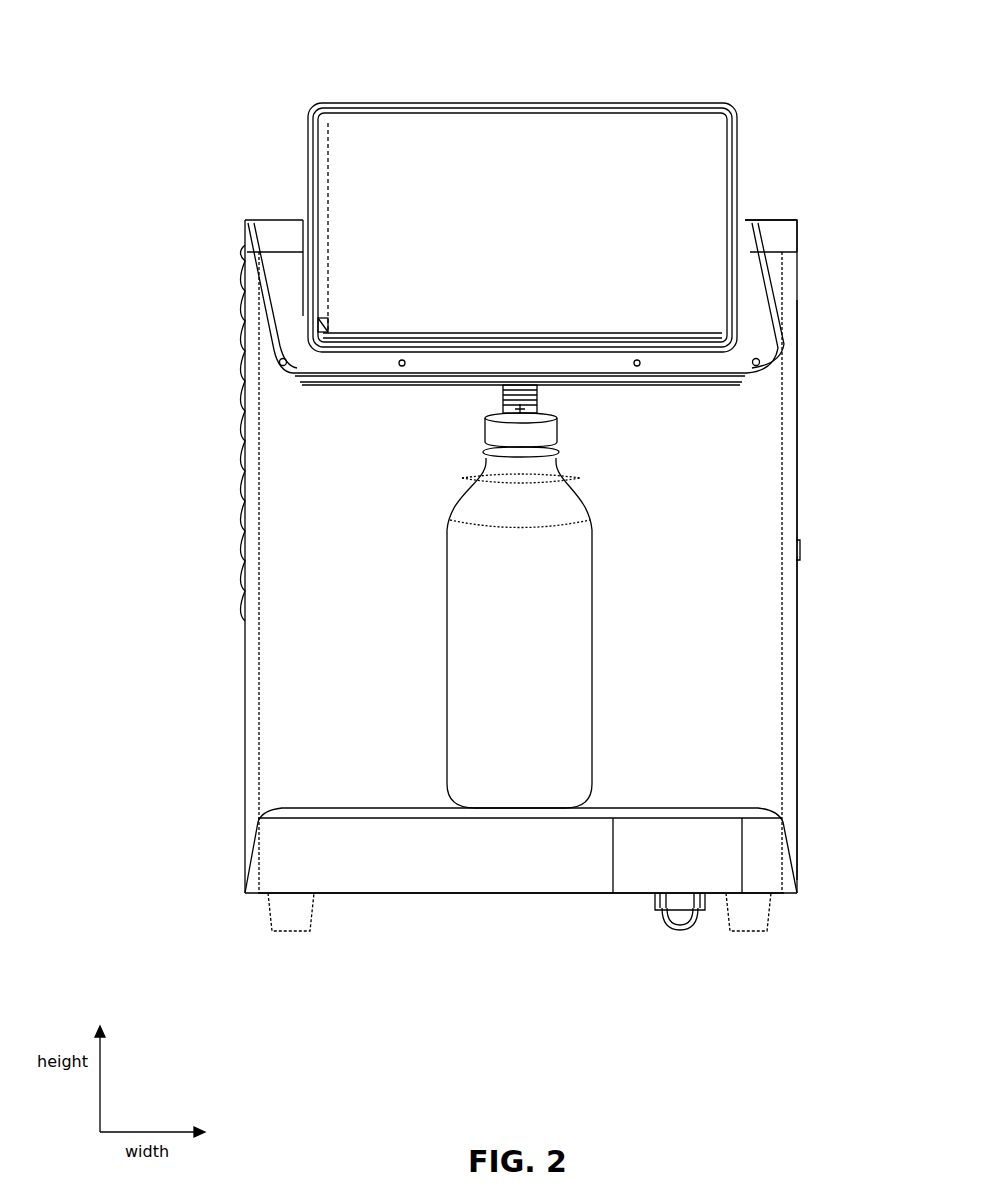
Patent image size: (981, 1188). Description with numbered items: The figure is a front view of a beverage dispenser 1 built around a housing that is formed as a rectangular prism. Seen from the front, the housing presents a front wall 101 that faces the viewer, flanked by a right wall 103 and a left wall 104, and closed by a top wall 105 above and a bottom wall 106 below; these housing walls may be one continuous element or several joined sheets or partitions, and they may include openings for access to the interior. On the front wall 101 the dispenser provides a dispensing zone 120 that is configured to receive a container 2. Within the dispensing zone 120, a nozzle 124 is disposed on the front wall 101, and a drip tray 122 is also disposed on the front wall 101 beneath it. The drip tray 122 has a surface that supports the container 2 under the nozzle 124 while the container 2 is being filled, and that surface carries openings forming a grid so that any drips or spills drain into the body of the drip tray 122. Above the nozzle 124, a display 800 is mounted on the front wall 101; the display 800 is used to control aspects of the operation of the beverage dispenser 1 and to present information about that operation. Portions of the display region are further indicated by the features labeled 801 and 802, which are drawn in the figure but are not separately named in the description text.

The beverage dispenser 1 is at (783, 70).
The container 2 is at (445, 600).
The front wall 101 is at (278, 678).
The right wall 103 is at (797, 475).
The left wall 104 is at (243, 648).
The top wall 105 is at (768, 218).
The bottom wall 106 is at (469, 893).
The dispensing zone 120 is at (610, 548).
The drip tray 122 is at (371, 872).
The nozzle 124 is at (500, 398).
The display 800 is at (310, 123).
The lid side 801 is at (330, 226).
The lid corner element 802 is at (318, 324).